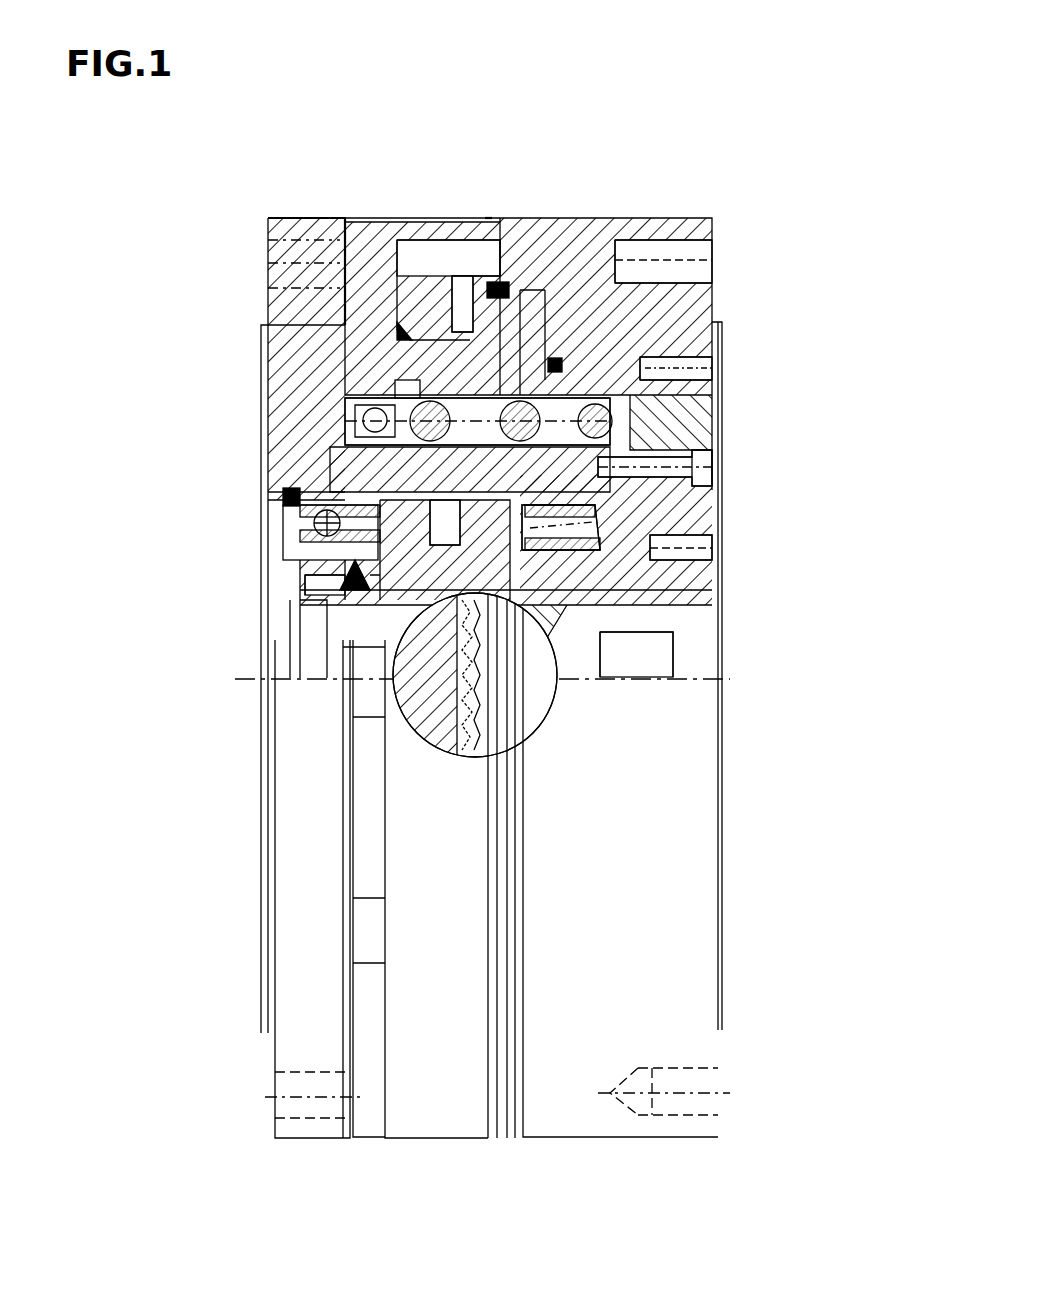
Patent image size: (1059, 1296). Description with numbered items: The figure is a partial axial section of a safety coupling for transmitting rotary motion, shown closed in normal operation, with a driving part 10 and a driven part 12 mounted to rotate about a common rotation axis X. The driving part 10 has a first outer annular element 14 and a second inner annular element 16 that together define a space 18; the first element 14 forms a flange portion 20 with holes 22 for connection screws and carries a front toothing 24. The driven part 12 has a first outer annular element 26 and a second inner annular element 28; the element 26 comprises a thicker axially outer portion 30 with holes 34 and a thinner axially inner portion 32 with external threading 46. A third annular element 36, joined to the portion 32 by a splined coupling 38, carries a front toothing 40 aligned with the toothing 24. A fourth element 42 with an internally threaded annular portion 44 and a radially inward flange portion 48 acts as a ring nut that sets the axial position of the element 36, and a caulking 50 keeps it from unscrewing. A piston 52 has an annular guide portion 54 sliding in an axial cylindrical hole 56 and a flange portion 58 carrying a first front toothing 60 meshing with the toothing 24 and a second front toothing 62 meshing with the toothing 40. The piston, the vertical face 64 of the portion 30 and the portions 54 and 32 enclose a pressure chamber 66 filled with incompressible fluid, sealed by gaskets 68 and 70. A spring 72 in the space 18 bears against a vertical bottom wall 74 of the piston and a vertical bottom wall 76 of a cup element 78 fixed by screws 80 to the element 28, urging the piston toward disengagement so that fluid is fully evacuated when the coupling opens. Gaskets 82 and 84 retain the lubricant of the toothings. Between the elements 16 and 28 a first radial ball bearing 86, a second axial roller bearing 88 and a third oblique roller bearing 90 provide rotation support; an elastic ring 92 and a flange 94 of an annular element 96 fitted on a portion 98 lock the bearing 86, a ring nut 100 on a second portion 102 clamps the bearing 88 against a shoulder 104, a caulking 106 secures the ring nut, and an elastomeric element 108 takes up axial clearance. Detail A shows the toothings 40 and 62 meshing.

The driving part 10 is at (240, 325).
The driven part 12 is at (730, 300).
The first outer annular element 14 is at (300, 218).
The second inner annular element 16 is at (310, 445).
The space 18 is at (355, 455).
The flange portion 20 is at (268, 228).
The holes 22 is at (345, 218).
The front toothing 24 is at (545, 290).
The first outer annular element 26 is at (622, 218).
The second inner annular element 28 is at (650, 512).
The first axially outer portion 30 is at (700, 347).
The second axially inner portion 32 is at (450, 218).
The holes 34 is at (712, 240).
The third annular element 36 is at (520, 330).
The splined coupling 38 is at (428, 300).
The front toothing 40 is at (480, 340).
The fourth element 42 is at (398, 322).
The internally threaded annular portion 44 is at (465, 276).
The external threading 46 is at (488, 284).
The flange portion 48 is at (397, 330).
The caulking 50 is at (512, 295).
The piston 52 is at (660, 425).
The annular guide portion 54 is at (600, 330).
The axial cylindrical hole 56 is at (700, 372).
The flange portion 58 is at (560, 356).
The first front toothing 60 is at (300, 390).
The second front toothing 62 is at (335, 350).
The vertical face 64 is at (620, 340).
The pressure chamber 66 is at (345, 418).
The gasket 68 is at (505, 290).
The gasket 70 is at (650, 440).
The spring 72 is at (290, 498).
The vertical bottom wall 74 is at (700, 458).
The vertical bottom wall 76 is at (340, 468).
The cup element 78 is at (340, 592).
The screws 80 is at (700, 470).
The gasket 82 is at (488, 218).
The gasket 84 is at (400, 265).
The first radial ball bearing 86 is at (330, 555).
The second axial roller bearing 88 is at (620, 590).
The third oblique roller bearing 90 is at (665, 548).
The elastic ring 92 is at (315, 522).
The flange 94 is at (300, 578).
The annular element 96 is at (320, 575).
The portion 98 is at (340, 612).
The ring nut 100 is at (600, 625).
The second portion 102 is at (410, 660).
The shoulder 104 is at (660, 580).
The caulking 106 is at (390, 680).
The elastomeric element 108 is at (365, 700).
The rotation axis X is at (700, 680).
The detail A is at (540, 740).